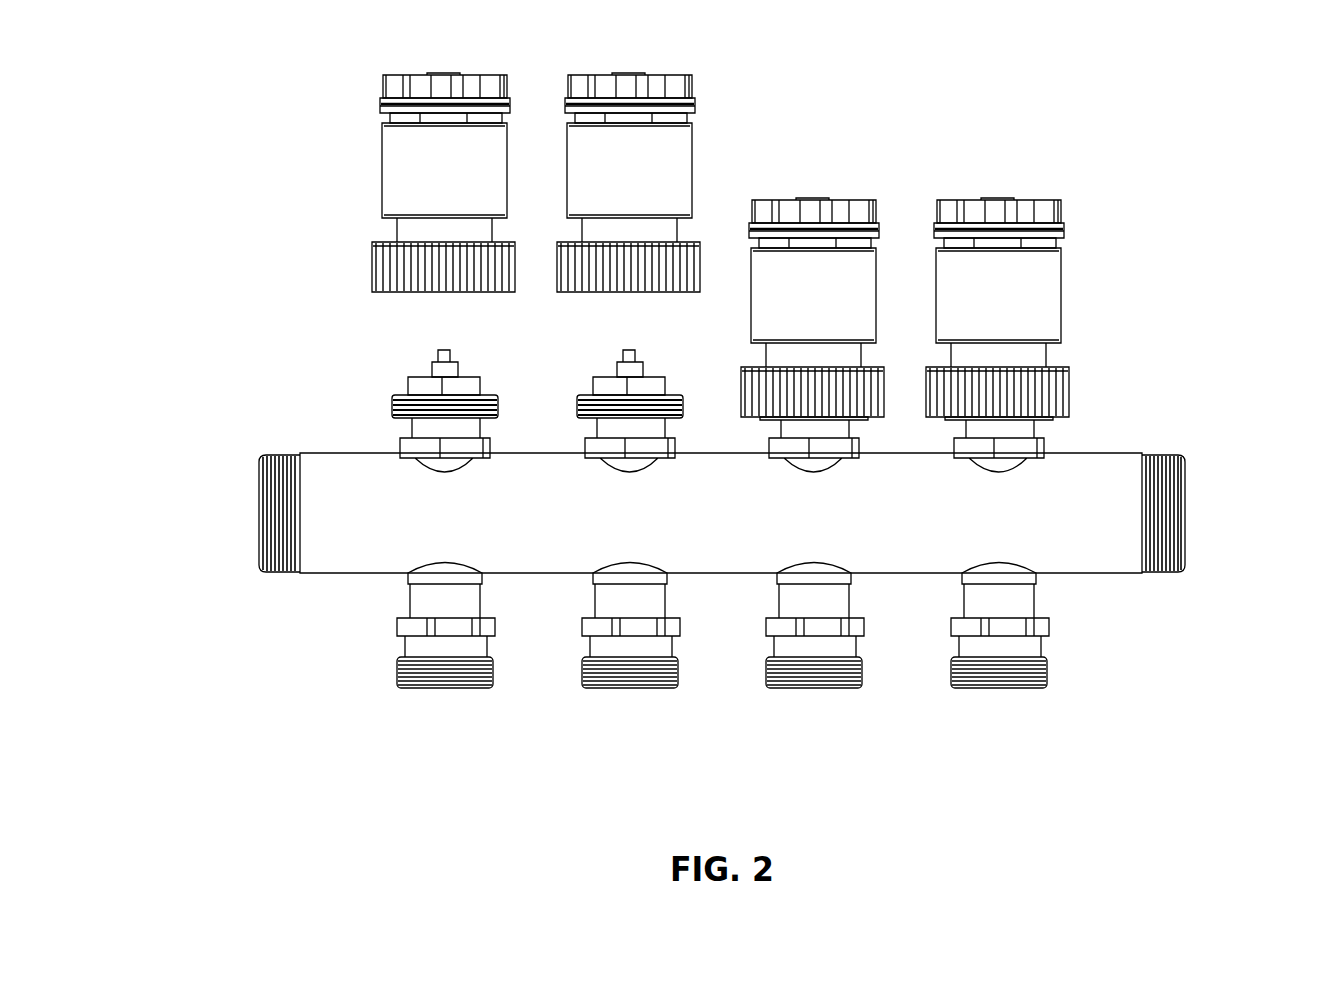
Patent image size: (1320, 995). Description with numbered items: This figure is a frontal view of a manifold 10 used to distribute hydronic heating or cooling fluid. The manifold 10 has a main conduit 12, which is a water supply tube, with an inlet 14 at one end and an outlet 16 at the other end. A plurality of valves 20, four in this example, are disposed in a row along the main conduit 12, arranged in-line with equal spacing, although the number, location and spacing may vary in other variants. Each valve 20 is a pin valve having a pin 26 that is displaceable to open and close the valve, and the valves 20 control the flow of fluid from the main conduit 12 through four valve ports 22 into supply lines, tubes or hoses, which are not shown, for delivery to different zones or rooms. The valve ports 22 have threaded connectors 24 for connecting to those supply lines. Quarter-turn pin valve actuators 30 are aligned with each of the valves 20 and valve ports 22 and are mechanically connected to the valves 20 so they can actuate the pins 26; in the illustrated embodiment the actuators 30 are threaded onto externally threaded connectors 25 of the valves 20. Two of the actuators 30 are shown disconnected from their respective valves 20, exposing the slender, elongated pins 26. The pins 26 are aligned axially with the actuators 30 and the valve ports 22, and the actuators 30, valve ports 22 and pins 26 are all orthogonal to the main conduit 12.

The manifold 10 is at (1166, 261).
The main conduit 12 is at (392, 527).
The inlet 14 is at (258, 537).
The outlet 16 is at (1177, 512).
The valve 20 is at (417, 430).
The valve port 22 is at (452, 697).
The threaded connector 24 is at (1047, 670).
The externally threaded connector 25 is at (492, 397).
The pin 26 is at (443, 350).
The quarter-turn pin valve actuator 30 is at (507, 158).